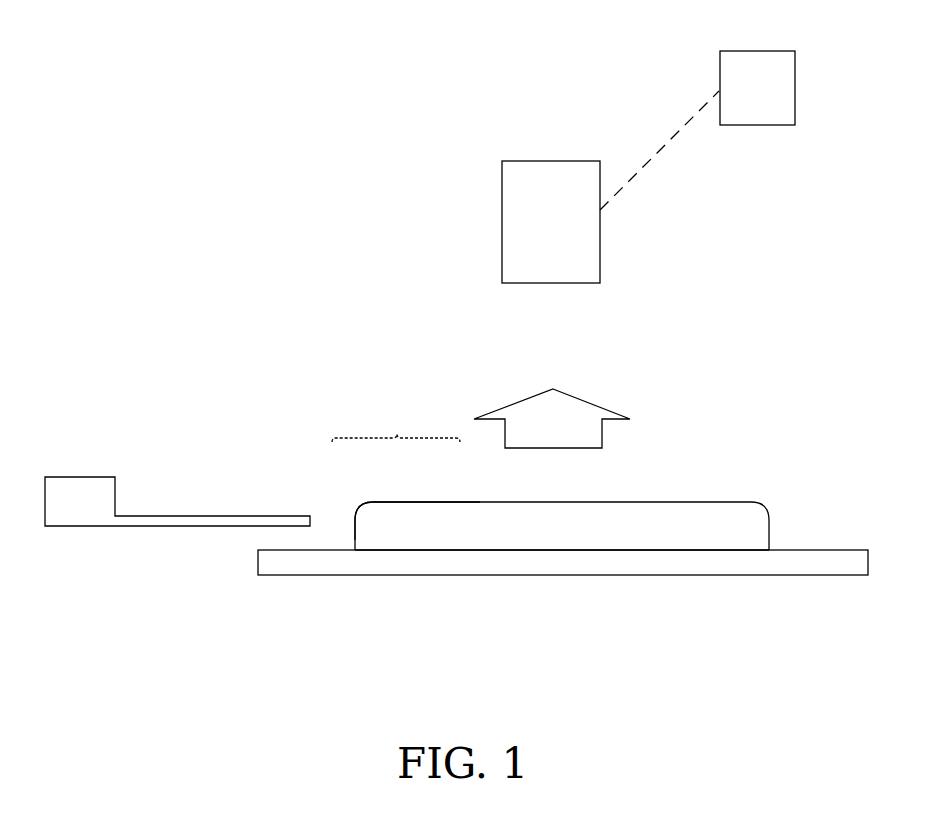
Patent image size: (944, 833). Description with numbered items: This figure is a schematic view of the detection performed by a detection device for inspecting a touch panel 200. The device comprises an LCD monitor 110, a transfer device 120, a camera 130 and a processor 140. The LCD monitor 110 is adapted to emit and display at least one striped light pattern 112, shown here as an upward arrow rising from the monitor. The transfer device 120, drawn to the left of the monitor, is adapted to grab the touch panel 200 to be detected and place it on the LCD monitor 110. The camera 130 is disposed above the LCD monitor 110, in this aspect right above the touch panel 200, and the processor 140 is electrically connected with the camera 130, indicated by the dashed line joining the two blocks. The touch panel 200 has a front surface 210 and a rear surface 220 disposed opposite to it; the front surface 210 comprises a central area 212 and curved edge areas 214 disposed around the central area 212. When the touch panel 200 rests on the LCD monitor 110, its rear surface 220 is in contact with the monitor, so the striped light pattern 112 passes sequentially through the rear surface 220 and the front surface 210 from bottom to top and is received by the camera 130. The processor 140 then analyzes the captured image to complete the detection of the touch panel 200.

The LCD monitor 110 is at (263, 562).
The striped light pattern 112 is at (582, 408).
The transfer device 120 is at (193, 522).
The camera 130 is at (510, 197).
The processor 140 is at (732, 62).
The touch panel 200 is at (758, 527).
The front surface 210 is at (396, 423).
The central area 212 is at (435, 510).
The edge areas 214 is at (363, 512).
The rear surface 220 is at (413, 557).